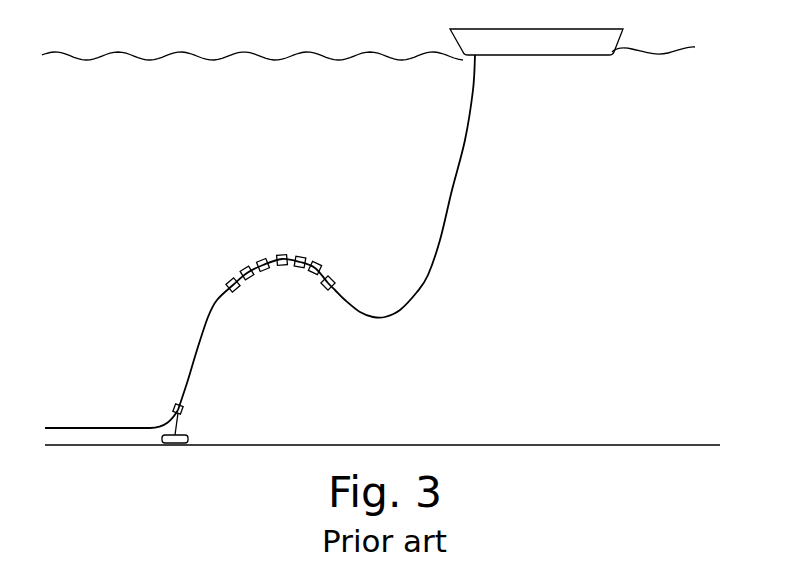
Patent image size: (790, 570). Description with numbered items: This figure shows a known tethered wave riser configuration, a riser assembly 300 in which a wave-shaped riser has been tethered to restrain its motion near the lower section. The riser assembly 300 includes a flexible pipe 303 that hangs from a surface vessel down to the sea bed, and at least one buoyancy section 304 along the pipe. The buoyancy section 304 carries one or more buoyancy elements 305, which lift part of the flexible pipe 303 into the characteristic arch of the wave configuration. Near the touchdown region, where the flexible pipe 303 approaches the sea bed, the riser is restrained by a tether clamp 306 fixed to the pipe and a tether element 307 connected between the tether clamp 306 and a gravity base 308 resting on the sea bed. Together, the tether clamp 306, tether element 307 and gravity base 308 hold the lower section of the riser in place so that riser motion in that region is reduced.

The riser assembly 300 is at (553, 215).
The flexible pipe 303 is at (448, 197).
The buoyancy section 304 is at (280, 293).
The buoyancy elements 305 is at (264, 262).
The tether clamp 306 is at (176, 405).
The tether element 307 is at (183, 420).
The gravity base 308 is at (190, 443).